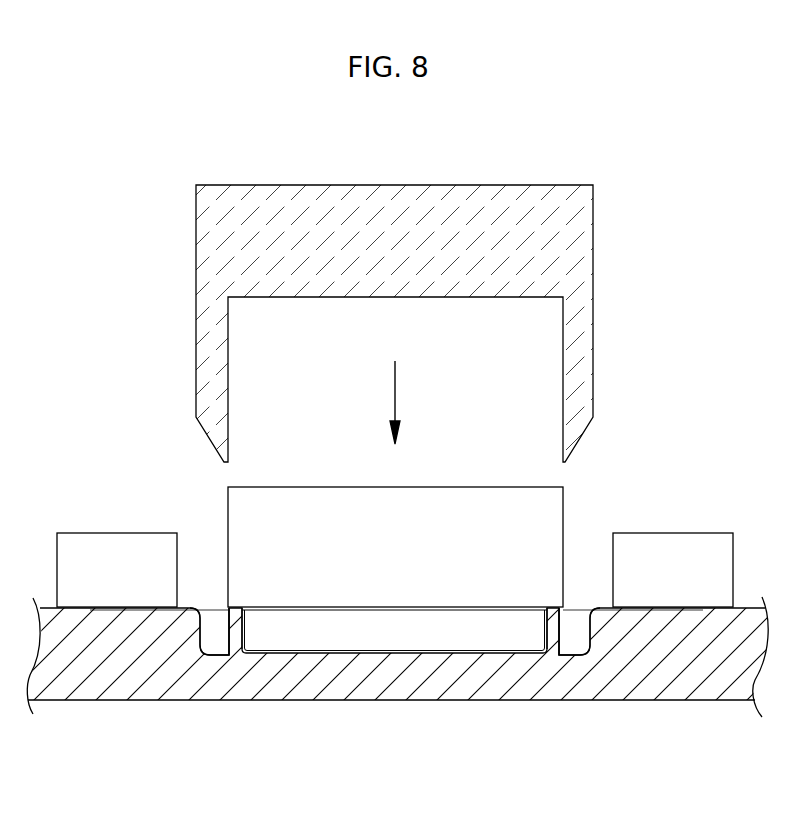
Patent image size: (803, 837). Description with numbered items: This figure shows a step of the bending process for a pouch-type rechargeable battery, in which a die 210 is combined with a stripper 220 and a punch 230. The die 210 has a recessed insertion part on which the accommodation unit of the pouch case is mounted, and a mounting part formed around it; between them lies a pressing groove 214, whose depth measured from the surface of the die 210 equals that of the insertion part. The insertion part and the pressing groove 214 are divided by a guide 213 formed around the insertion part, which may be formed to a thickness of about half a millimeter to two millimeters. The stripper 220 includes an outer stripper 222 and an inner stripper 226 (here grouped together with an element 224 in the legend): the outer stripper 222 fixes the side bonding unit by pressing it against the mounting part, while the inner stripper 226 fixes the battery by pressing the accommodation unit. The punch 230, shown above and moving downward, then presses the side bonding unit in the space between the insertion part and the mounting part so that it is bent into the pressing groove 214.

The die 210 is at (394, 696).
The guide 213 is at (228, 632).
The pressing groove 214 is at (225, 625).
The stripper 220 is at (394, 633).
The outer stripper 222 is at (116, 540).
The second electronic element 224 is at (674, 540).
The inner stripper 226 is at (461, 490).
The punch 230 is at (393, 195).